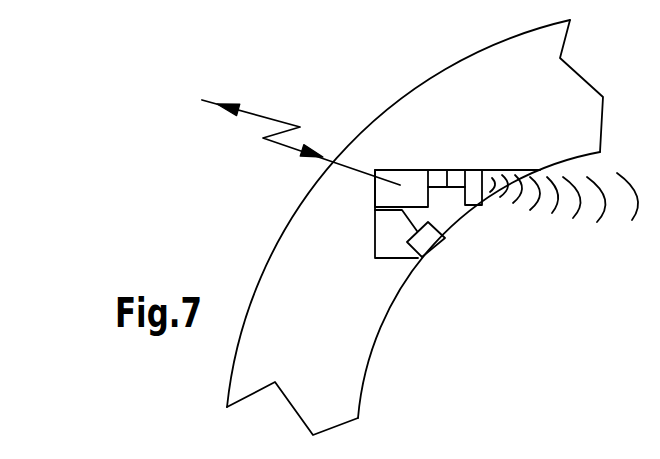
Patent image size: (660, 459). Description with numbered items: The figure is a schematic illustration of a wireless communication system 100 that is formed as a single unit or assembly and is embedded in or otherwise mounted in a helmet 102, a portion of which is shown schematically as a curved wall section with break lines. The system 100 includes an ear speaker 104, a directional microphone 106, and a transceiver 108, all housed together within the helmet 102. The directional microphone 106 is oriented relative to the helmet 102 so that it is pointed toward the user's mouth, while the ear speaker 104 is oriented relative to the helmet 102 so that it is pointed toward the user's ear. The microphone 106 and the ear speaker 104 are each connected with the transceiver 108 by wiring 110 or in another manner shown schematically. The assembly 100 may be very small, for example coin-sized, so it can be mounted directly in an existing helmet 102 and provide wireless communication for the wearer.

The communication system 100 is at (420, 131).
The helmet 102 is at (338, 370).
The ear speaker 104 is at (427, 237).
The directional microphone 106 is at (475, 180).
The transceiver 108 is at (398, 182).
The wiring 110 is at (448, 170).